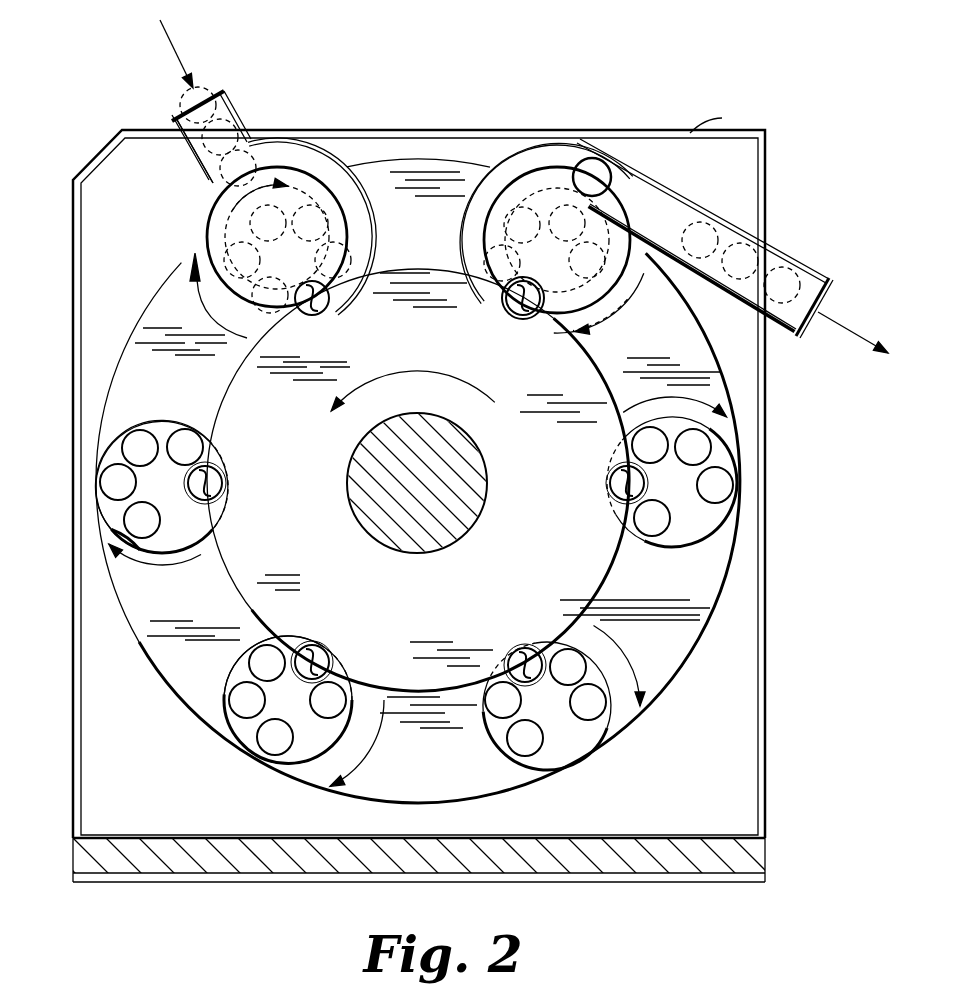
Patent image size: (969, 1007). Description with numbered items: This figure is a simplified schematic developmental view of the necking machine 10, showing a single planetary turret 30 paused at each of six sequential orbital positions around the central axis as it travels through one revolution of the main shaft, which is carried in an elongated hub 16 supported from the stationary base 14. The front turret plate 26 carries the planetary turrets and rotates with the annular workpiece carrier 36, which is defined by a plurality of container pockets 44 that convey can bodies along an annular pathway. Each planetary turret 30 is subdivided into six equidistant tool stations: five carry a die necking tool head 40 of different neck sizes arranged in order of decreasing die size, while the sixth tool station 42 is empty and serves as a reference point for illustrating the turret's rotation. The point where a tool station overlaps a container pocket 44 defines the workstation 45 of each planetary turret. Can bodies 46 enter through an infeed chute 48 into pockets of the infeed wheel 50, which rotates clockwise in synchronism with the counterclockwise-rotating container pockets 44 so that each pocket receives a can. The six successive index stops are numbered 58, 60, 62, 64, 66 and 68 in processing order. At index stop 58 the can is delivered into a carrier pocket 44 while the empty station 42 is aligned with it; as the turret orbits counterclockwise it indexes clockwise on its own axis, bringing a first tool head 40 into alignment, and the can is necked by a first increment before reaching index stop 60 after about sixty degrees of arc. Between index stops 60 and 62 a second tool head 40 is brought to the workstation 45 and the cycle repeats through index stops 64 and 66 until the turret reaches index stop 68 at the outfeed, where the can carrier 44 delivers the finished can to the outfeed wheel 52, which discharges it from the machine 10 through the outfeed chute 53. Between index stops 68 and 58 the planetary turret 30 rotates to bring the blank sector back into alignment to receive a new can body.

The necking machine 10 is at (767, 200).
The base 14 is at (727, 776).
The elongated hub 16 is at (430, 465).
The front turret plate 26 is at (695, 585).
The planetary turret 30 is at (237, 307).
The workpiece carrier 36 is at (583, 568).
The tool head 40 is at (180, 442).
The empty tool station 42 is at (200, 560).
The container pocket 44 is at (323, 315).
The workstation 45 is at (318, 655).
The can body 46 is at (217, 148).
The infeed chute 48 is at (225, 103).
The infeed wheel 50 is at (293, 183).
The outfeed wheel 52 is at (540, 163).
The outfeed chute 53 is at (722, 140).
The first index stop 58 is at (280, 267).
The second index stop 60 is at (160, 495).
The third index stop 62 is at (297, 705).
The fourth index stop 64 is at (555, 725).
The fifth index stop 66 is at (690, 473).
The sixth index stop 68 is at (593, 290).